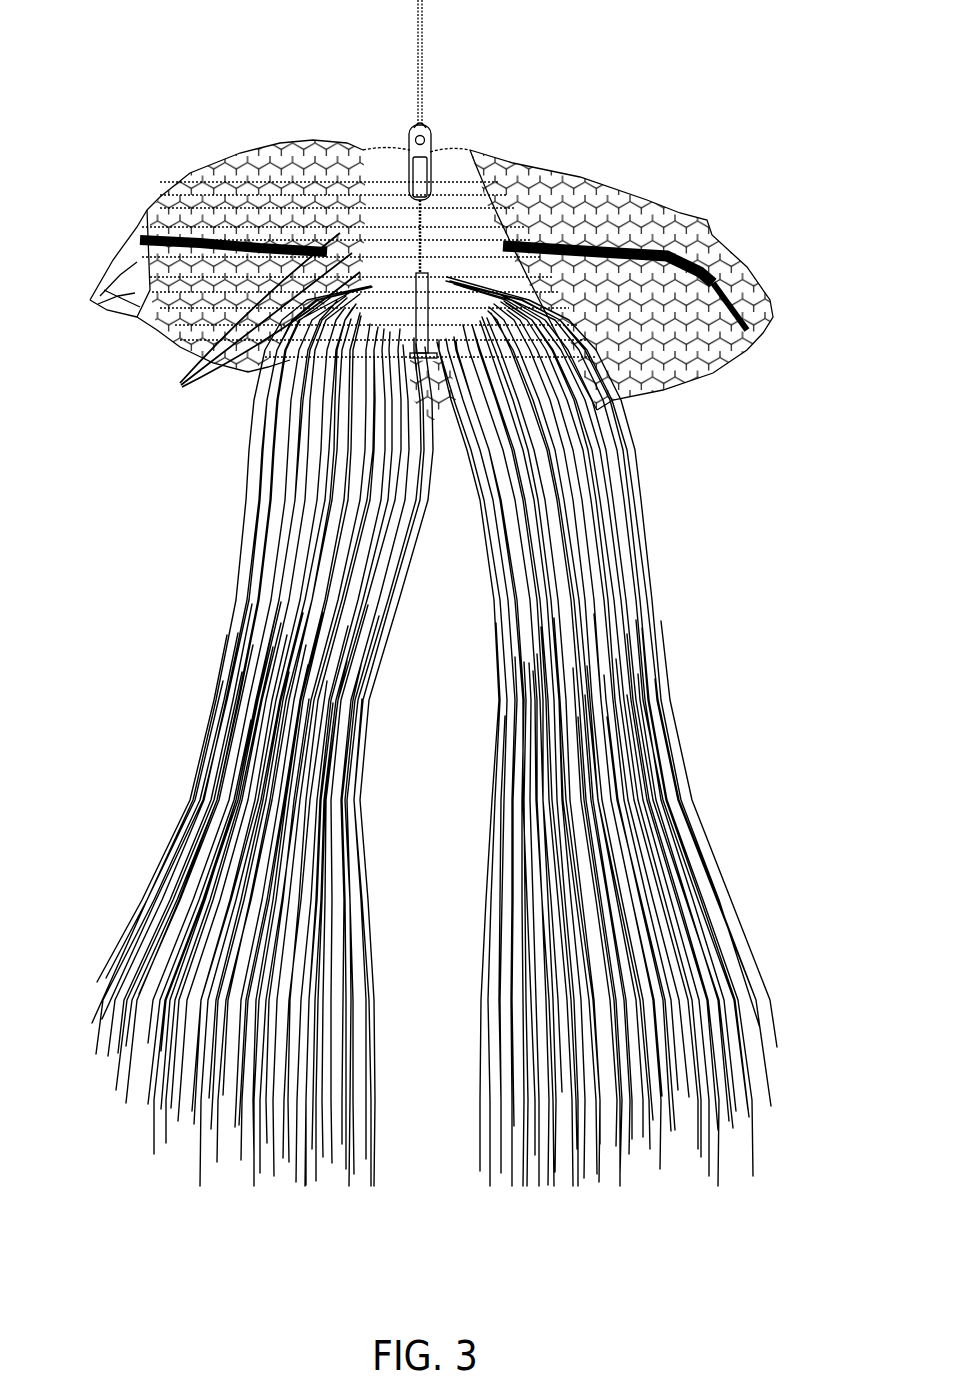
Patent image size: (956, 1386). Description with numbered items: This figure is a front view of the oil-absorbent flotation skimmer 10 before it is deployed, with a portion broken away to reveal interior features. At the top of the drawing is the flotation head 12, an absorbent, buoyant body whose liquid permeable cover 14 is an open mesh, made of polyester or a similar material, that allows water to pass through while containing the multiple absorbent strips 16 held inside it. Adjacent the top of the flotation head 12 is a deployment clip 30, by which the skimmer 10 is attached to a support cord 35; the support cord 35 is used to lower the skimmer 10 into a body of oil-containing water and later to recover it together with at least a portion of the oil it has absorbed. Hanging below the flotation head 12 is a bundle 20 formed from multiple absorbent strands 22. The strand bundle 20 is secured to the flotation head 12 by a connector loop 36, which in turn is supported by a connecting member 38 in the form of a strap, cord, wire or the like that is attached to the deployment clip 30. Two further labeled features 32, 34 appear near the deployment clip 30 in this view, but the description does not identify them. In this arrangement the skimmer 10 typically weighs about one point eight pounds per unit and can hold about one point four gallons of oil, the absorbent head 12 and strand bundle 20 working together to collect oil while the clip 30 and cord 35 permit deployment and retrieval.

The oil-absorbent flotation skimmer 10 is at (200, 132).
The flotation head 12 is at (645, 190).
The liquid permeable cover 14 is at (130, 263).
The absorbent strips 16 is at (265, 328).
The absorbent flotation strand bundle 20 is at (674, 718).
The absorbent strands 22 is at (745, 1043).
The deployment clip 30 is at (472, 100).
The clip 32 is at (426, 141).
The clip body 34 is at (440, 196).
The support cord 35 is at (425, 52).
The connector loop 36 is at (420, 305).
The connecting member 38 is at (413, 237).